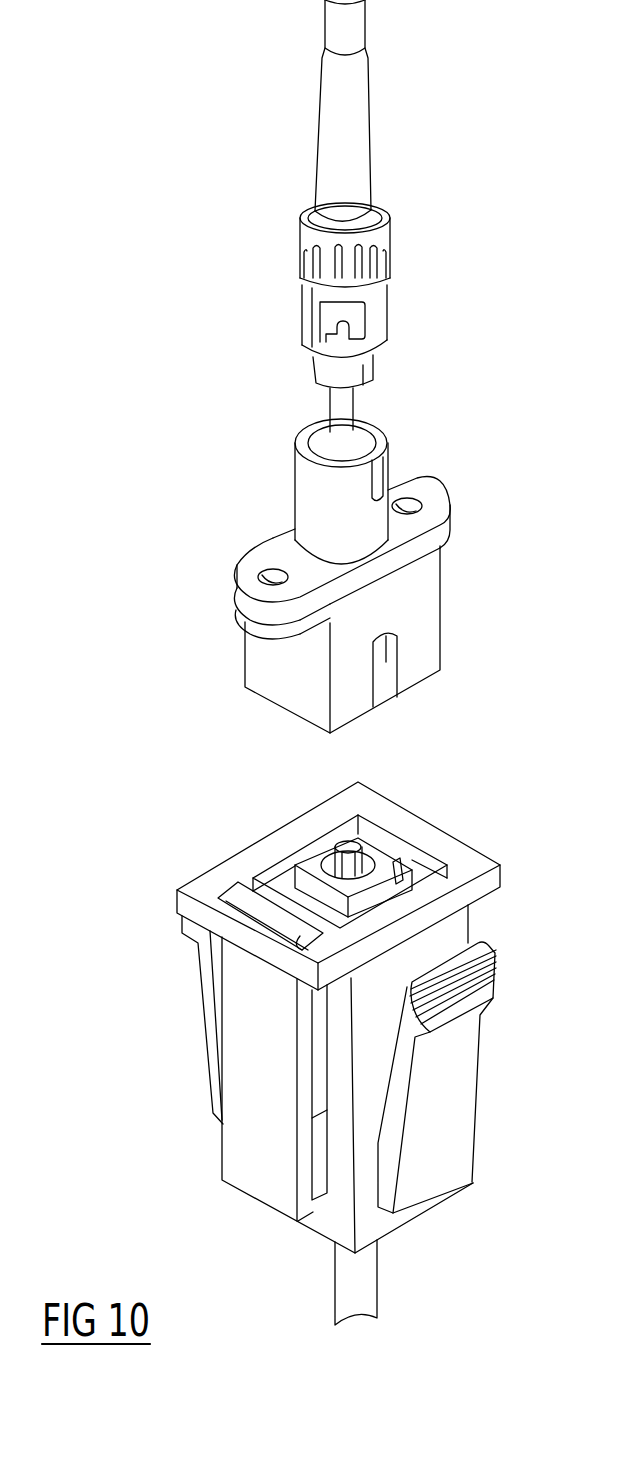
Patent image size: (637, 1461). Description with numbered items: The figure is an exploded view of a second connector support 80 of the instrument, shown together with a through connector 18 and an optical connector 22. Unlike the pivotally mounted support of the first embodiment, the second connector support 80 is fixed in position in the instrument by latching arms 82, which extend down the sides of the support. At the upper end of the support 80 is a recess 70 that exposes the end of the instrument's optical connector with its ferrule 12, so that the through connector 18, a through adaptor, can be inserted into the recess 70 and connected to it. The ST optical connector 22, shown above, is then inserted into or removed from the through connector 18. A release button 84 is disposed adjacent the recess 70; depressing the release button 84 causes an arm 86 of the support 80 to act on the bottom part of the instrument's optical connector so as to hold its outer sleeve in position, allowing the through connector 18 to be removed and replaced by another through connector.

The optical connector 22 is at (378, 306).
The through connector 18 is at (425, 607).
The second connector support 80 is at (408, 825).
The recess 70 is at (273, 872).
The ferrule 12 is at (348, 850).
The release button 84 is at (233, 900).
The latching arms 82 is at (207, 990).
The arm 86 is at (303, 1202).